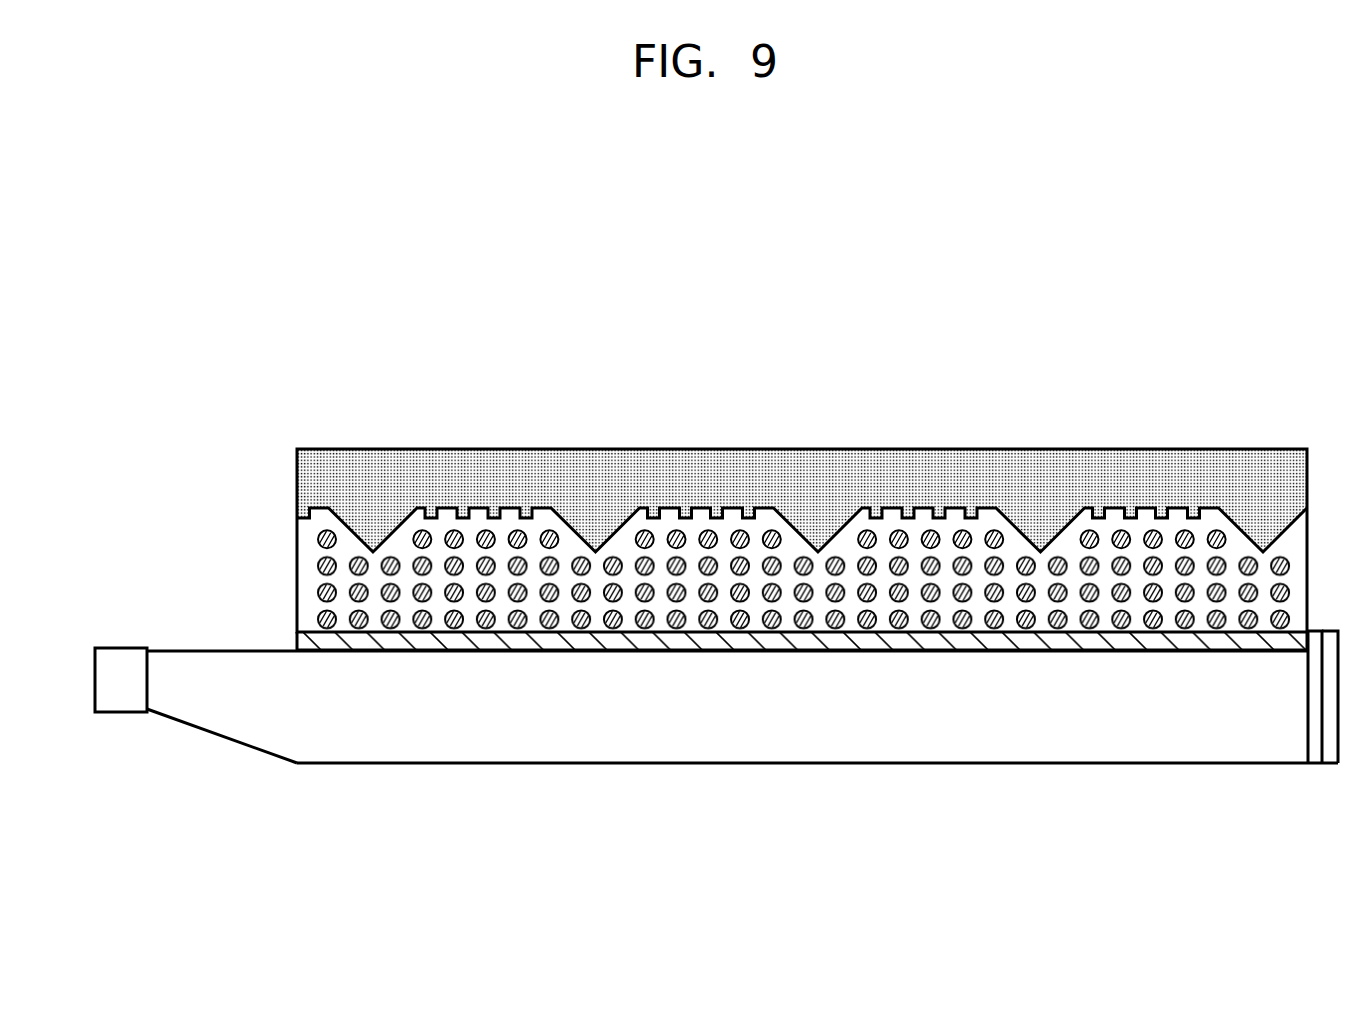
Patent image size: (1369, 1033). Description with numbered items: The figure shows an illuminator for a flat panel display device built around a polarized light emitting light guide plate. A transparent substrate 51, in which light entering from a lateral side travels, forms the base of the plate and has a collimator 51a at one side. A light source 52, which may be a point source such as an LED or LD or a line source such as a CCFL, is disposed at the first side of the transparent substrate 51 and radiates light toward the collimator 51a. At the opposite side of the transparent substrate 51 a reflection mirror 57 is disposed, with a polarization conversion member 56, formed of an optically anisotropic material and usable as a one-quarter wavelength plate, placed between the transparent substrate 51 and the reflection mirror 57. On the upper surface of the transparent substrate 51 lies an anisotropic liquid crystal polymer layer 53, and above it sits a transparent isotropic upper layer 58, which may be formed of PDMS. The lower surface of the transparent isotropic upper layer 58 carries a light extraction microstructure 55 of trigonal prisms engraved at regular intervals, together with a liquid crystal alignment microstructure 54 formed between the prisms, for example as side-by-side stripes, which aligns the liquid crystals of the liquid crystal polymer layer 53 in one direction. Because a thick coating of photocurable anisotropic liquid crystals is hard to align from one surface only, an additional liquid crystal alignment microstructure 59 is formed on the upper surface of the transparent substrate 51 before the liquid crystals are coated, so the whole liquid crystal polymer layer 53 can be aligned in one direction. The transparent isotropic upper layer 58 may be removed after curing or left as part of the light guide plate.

The transparent substrate 51 is at (408, 748).
The collimator 51a is at (202, 735).
The light source 52 is at (103, 683).
The anisotropic liquid crystal polymer layer 53 is at (312, 595).
The liquid crystal alignment microstructure 54 is at (297, 502).
The light extraction microstructure 55 is at (363, 510).
The polarization conversion member 56 is at (1315, 752).
The reflection mirror 57 is at (1332, 752).
The transparent isotropic upper layer 58 is at (303, 476).
The liquid crystal alignment microstructure 59 is at (297, 636).